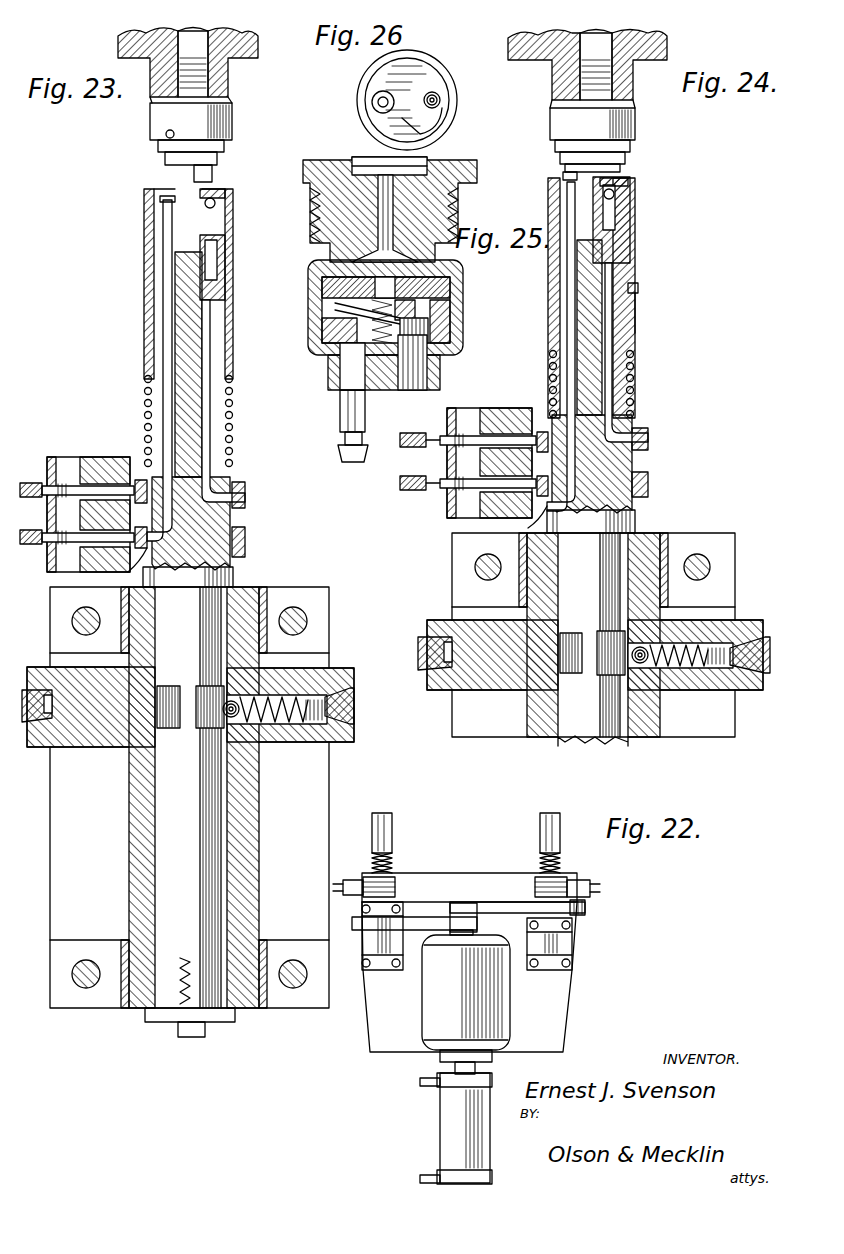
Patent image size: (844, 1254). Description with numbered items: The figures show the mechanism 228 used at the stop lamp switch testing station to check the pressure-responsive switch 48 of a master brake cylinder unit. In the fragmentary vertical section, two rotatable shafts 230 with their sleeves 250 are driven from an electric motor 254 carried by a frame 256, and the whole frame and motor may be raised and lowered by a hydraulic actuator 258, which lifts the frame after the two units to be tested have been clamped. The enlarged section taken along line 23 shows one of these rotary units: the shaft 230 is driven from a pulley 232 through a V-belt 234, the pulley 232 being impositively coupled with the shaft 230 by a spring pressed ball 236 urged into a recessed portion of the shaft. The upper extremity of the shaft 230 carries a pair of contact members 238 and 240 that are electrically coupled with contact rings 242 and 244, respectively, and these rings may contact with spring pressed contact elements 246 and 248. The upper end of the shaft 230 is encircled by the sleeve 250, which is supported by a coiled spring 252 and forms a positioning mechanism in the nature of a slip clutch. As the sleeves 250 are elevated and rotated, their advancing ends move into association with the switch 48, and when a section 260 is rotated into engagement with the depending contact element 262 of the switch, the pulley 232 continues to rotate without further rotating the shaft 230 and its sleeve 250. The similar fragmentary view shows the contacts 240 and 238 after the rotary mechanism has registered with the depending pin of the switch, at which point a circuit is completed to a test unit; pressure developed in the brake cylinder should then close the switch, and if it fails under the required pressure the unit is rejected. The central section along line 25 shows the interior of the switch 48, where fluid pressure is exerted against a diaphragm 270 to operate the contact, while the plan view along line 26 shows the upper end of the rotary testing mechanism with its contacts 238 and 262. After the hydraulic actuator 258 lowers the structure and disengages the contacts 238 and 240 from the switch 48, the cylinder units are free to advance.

In FIG. 22, the section line 23— 23 is at (360, 790).
In FIG. 23, the section line 25— 25 is at (198, 47).
In FIG. 23, the section line 26— 26 is at (172, 181).
In FIG. 23, the pressure-responsive switch device 48 is at (236, 118).
In FIG. 26, the pressure-responsive switch device 48 is at (442, 68).
In FIG. 25, the pressure-responsive switch device 48 is at (463, 320).
In FIG. 24, the pressure-responsive switch device 48 is at (642, 136).
In FIG. 23, the switch testing mechanism 228 is at (140, 430).
In FIG. 24, the switch testing mechanism 228 is at (664, 396).
In FIG. 22, the switch testing mechanism 228 is at (572, 985).
In FIG. 23, the rotary shaft 230 is at (210, 590).
In FIG. 24, the rotary shaft 230 is at (606, 478).
In FIG. 22, the rotary shaft 230 is at (386, 900).
In FIG. 23, the pulley 232 is at (354, 722).
In FIG. 24, the pulley 232 is at (702, 690).
In FIG. 22, the pulley 232 is at (576, 922).
In FIG. 23, the V-belt 234 is at (37, 706).
In FIG. 24, the V-belt 234 is at (418, 652).
In FIG. 22, the V-belt 234 is at (432, 925).
In FIG. 23, the spring pressed ball 236 is at (240, 703).
In FIG. 24, the spring pressed ball 236 is at (632, 655).
In FIG. 23, the contact member 238 is at (168, 230).
In FIG. 26, the contact member 238 is at (383, 102).
In FIG. 24, the contact member 238 is at (566, 186).
In FIG. 23, the contact member 240 is at (212, 250).
In FIG. 24, the contact member 240 is at (630, 212).
In FIG. 23, the contact ring 242 is at (147, 556).
In FIG. 24, the contact ring 242 is at (545, 514).
In FIG. 23, the contact ring 244 is at (246, 492).
In FIG. 24, the contact ring 244 is at (650, 440).
In FIG. 23, the spring pressed contact element 246 is at (100, 488).
In FIG. 24, the spring pressed contact element 246 is at (518, 432).
In FIG. 23, the spring pressed contact element 248 is at (74, 532).
In FIG. 24, the spring pressed contact element 248 is at (478, 492).
In FIG. 23, the sleeve 250 is at (145, 268).
In FIG. 26, the sleeve 250 is at (349, 102).
In FIG. 24, the sleeve 250 is at (548, 280).
In FIG. 22, the sleeve 250 is at (392, 825).
In FIG. 23, the coiled spring 252 is at (234, 402).
In FIG. 24, the coiled spring 252 is at (636, 362).
In FIG. 22, the electric motor 254 is at (506, 1022).
In FIG. 22, the frame 256 is at (555, 1010).
In FIG. 22, the hydraulic actuator 258 is at (460, 1130).
In FIG. 23, the section 260 is at (216, 185).
In FIG. 26, the section 260 is at (428, 112).
In FIG. 24, the section 260 is at (616, 184).
In FIG. 23, the depending contact element 262 is at (205, 183).
In FIG. 26, the depending contact element 262 is at (440, 98).
In FIG. 25, the depending contact element 262 is at (345, 412).
In FIG. 24, the depending contact element 262 is at (618, 200).
In FIG. 25, the diaphragm 270 is at (330, 290).